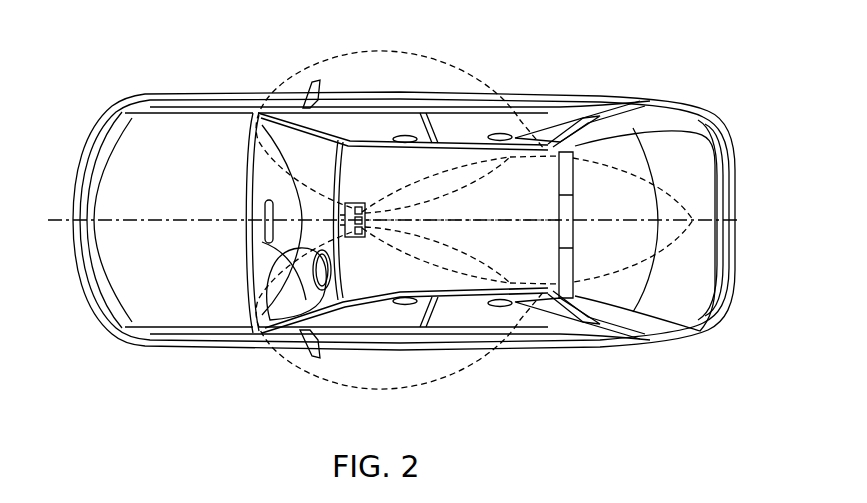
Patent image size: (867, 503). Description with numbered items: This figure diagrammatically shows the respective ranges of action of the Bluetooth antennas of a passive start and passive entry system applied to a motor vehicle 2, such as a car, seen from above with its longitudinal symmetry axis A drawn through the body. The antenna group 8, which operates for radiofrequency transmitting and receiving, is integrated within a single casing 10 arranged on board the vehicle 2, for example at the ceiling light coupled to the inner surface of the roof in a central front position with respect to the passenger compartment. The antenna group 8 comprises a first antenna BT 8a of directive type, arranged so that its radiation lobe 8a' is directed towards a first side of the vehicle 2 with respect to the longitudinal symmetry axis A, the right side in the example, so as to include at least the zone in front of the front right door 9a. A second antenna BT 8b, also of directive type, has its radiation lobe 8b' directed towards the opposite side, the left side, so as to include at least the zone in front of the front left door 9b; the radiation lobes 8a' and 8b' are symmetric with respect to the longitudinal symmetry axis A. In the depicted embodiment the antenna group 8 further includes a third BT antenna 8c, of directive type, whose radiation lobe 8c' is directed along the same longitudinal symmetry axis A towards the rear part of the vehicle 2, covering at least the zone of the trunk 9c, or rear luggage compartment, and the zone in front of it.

The motor vehicle 2 is at (233, 353).
The antenna group 8 is at (338, 212).
The first antenna BT 8a is at (460, 184).
The second antenna BT 8b is at (460, 255).
The third BT antenna 8c is at (452, 250).
The radiation lobe 8a' is at (400, 119).
The radiation lobe 8b' is at (400, 317).
The radiation lobe 8c' is at (634, 217).
The zone in front of the front right door 9a is at (356, 88).
The zone in front of the front left door 9b is at (381, 352).
The trunk 9c is at (694, 264).
The single casing 10 is at (350, 202).
The longitudinal symmetry axis A is at (62, 219).